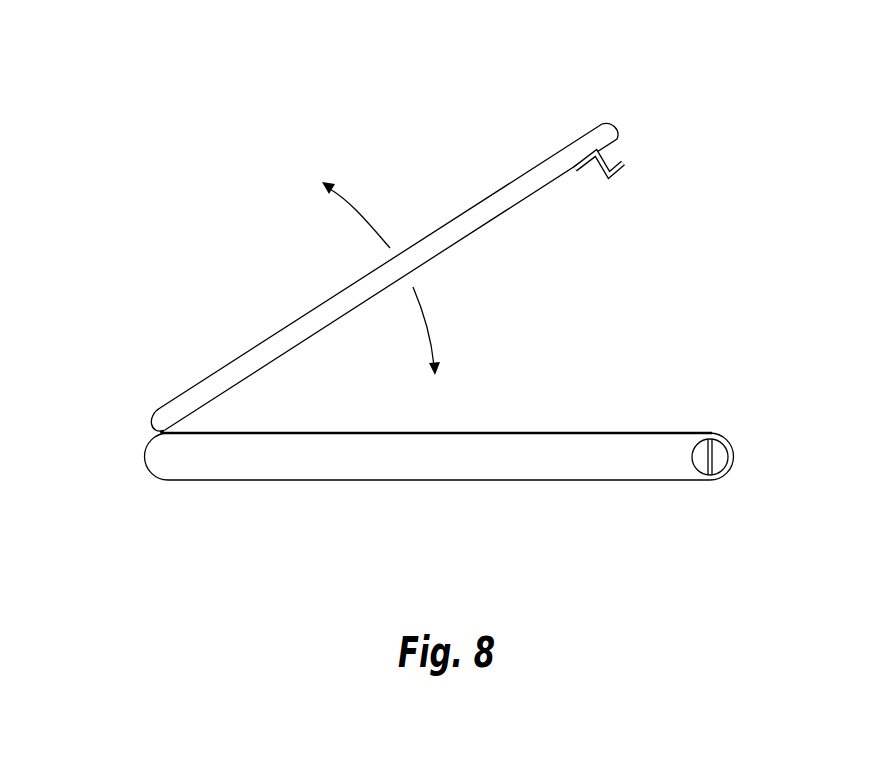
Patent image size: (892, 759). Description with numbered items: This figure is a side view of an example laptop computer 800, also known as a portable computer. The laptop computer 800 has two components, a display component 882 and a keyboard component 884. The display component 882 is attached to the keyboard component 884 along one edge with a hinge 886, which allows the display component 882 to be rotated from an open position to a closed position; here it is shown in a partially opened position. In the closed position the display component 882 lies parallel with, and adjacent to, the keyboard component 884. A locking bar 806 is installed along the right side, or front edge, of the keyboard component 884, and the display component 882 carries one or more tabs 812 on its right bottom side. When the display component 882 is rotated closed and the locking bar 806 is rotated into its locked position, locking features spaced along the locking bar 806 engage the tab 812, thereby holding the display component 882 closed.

The laptop computer 800 is at (357, 120).
The display component 882 is at (497, 191).
The keyboard component 884 is at (687, 481).
The locking bar 806 is at (724, 443).
The tab 812 is at (626, 170).
The hinge 886 is at (141, 434).